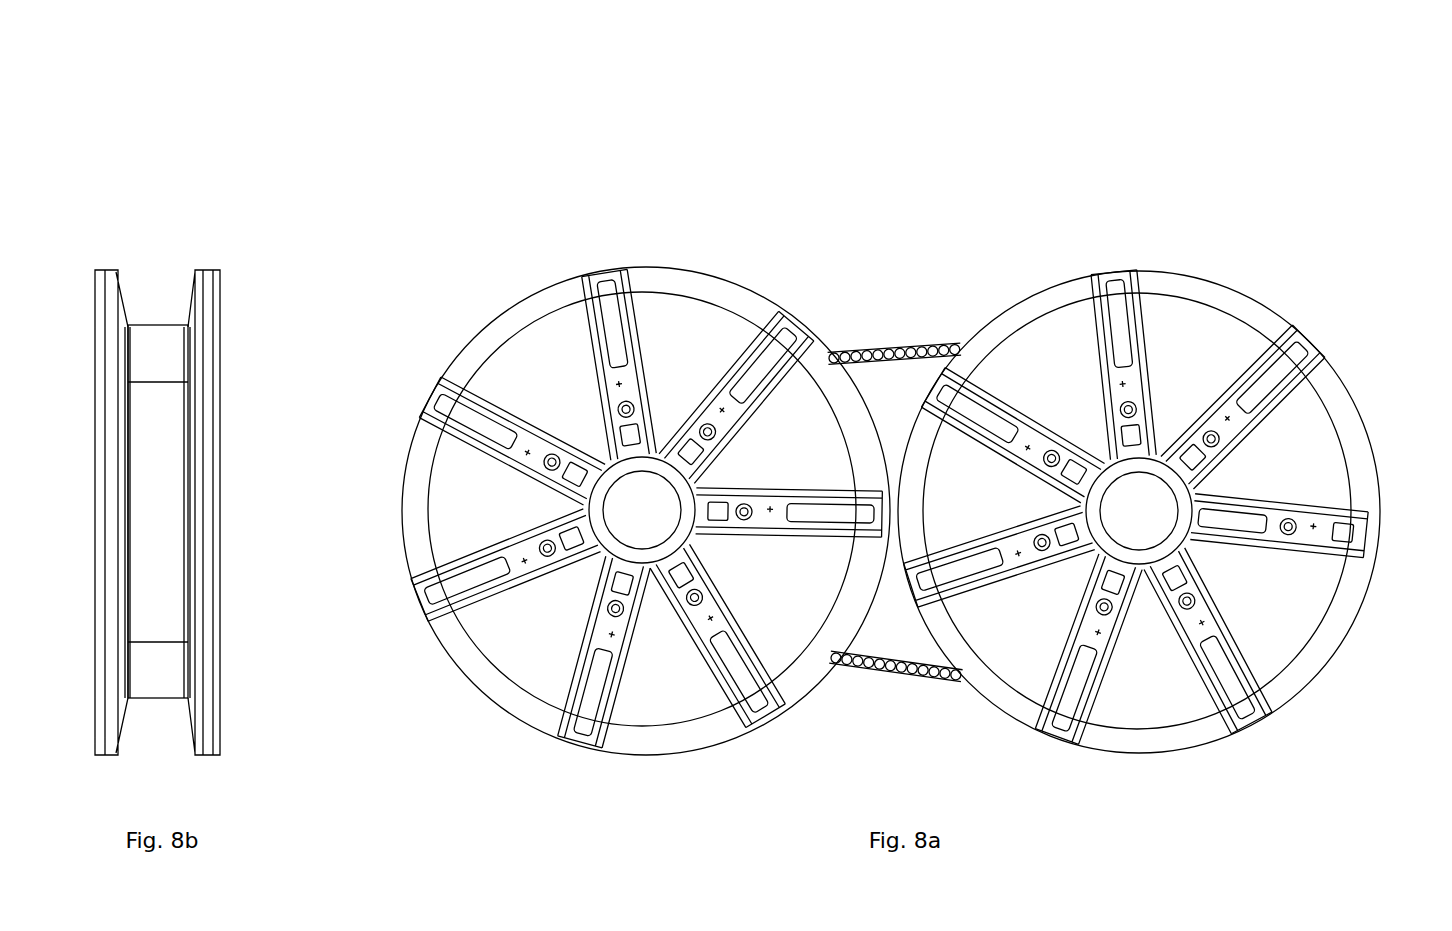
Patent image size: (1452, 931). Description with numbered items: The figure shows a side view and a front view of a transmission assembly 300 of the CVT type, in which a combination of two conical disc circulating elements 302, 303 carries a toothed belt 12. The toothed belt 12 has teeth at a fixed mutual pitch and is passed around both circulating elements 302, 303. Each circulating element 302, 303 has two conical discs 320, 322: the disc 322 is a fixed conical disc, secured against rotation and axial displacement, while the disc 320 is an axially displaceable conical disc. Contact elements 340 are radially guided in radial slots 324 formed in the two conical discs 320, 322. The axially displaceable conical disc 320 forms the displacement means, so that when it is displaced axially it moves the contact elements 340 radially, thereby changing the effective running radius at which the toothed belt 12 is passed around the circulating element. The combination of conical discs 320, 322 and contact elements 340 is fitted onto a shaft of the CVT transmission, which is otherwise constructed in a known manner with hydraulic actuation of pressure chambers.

In FIG. 8B, the toothed belt 12 is at (160, 288).
In FIG. 8A, the toothed belt 12 is at (920, 322).
In FIG. 8A, the pulley assembly 300 is at (1212, 163).
In FIG. 8A, the conical disc circulating element 302 is at (646, 507).
In FIG. 8A, the conical disc circulating element 303 is at (1166, 463).
In FIG. 8B, the axially displaceable conical disc 320 is at (109, 268).
In FIG. 8A, the axially displaceable conical disc 320 is at (1164, 385).
In FIG. 8B, the fixed conical disc 322 is at (221, 284).
In FIG. 8A, the radial slots 324 is at (452, 612).
In FIG. 8A, the contact elements 340 is at (652, 648).